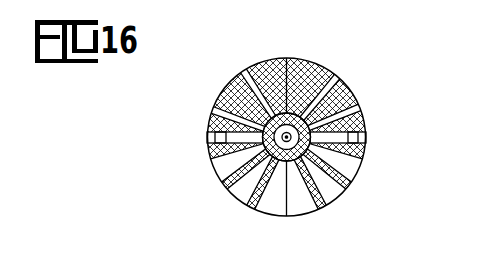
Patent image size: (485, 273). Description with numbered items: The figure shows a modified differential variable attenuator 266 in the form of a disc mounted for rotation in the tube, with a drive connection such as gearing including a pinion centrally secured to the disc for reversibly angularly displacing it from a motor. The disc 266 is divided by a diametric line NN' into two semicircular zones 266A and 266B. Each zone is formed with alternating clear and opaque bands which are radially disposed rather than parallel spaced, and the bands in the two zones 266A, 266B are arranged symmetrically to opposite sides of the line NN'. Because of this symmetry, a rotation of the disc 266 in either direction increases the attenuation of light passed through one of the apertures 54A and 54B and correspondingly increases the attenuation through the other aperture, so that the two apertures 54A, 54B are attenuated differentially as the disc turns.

The differential variable attenuator 266 is at (287, 135).
The semicircular zone 266A is at (333, 191).
The semicircular zone 266B is at (215, 168).
The aperture 54A is at (358, 137).
The aperture 54B is at (214, 140).